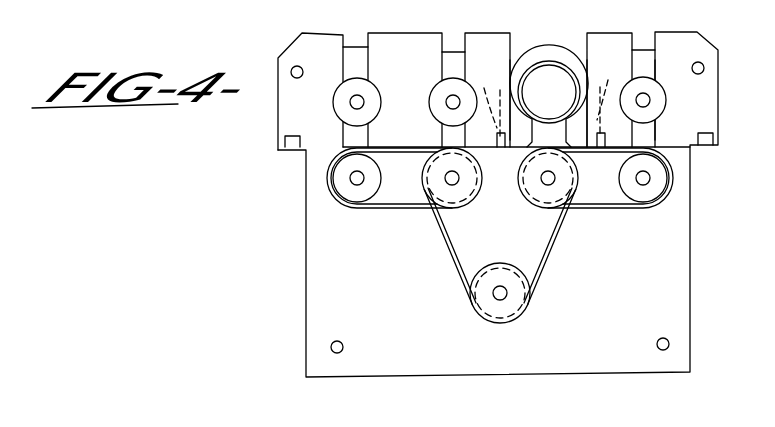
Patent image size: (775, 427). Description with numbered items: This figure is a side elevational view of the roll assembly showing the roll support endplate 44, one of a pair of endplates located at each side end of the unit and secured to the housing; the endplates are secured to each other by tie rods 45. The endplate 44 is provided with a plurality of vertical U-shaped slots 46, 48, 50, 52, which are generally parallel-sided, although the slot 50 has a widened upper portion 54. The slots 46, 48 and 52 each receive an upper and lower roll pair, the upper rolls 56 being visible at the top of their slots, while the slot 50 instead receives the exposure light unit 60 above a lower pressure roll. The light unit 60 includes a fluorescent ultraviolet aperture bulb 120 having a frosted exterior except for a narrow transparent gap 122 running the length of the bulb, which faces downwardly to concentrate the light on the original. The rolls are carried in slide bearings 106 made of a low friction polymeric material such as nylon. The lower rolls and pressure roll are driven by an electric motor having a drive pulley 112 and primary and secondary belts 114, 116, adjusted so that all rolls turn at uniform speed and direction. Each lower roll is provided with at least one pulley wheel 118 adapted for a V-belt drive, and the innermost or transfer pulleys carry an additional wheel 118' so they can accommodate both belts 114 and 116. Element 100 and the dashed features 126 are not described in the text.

The roll support endplate 44 is at (672, 271).
The tie rods 45 is at (704, 66).
The vertical U-shaped slot 46 is at (368, 58).
The vertical U-shaped slot 48 is at (465, 47).
The vertical U-shaped slot 50 is at (594, 48).
The vertical U-shaped slot 52 is at (657, 40).
The widened upper portion 54 is at (512, 48).
The upper rolls 56 is at (350, 47).
The exposure light unit 60 is at (560, 43).
The shaft 100 is at (362, 99).
The slide bearing 106 is at (343, 103).
The drive pulley 112 is at (518, 300).
The primary belt 114 is at (555, 243).
The secondary belt 116 is at (390, 209).
The pulley wheel 118 is at (501, 195).
The additional wheel 118' is at (491, 201).
The ultraviolet aperture bulb 120 is at (556, 77).
The transparent gap 122 is at (558, 112).
The dashed guide lines 126 is at (548, 102).